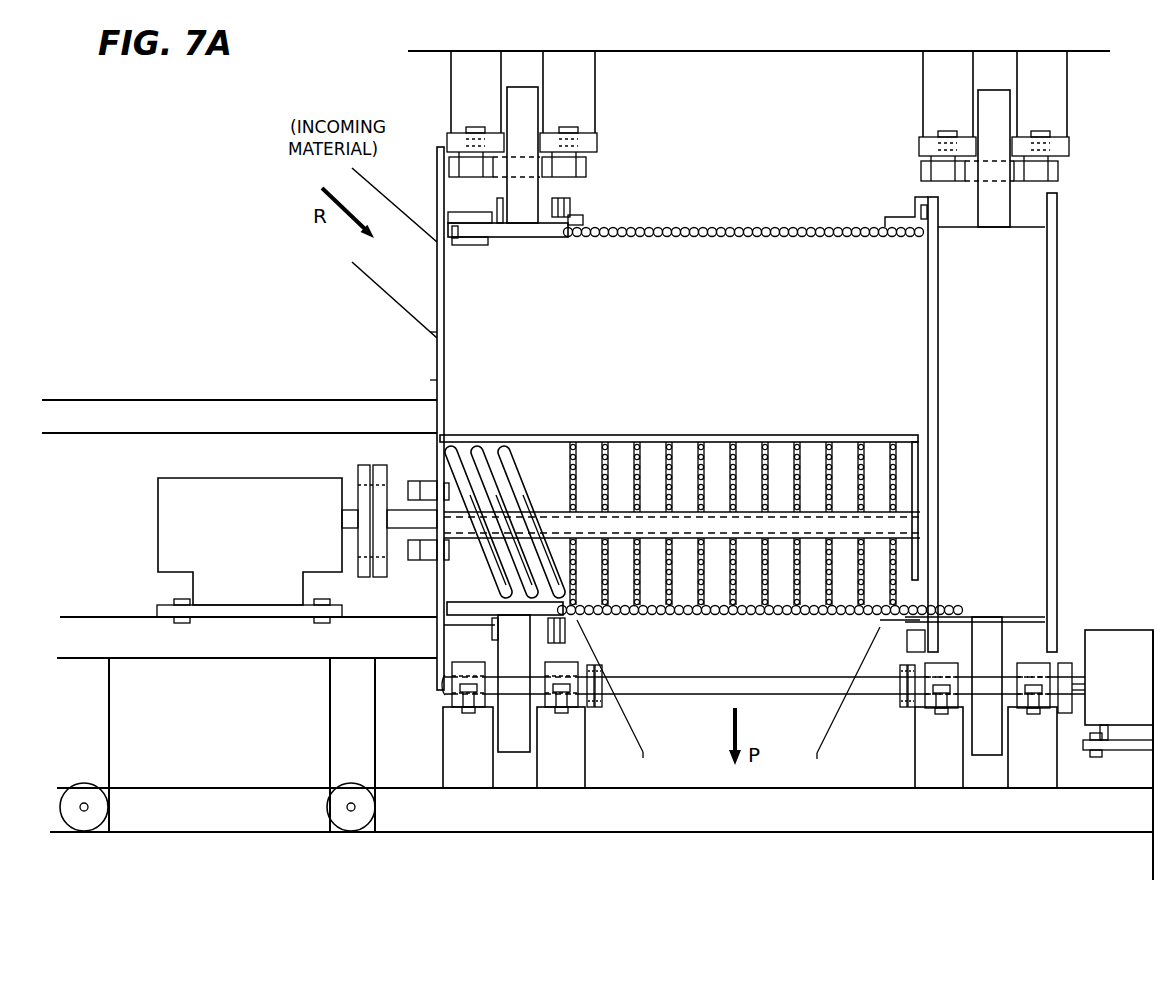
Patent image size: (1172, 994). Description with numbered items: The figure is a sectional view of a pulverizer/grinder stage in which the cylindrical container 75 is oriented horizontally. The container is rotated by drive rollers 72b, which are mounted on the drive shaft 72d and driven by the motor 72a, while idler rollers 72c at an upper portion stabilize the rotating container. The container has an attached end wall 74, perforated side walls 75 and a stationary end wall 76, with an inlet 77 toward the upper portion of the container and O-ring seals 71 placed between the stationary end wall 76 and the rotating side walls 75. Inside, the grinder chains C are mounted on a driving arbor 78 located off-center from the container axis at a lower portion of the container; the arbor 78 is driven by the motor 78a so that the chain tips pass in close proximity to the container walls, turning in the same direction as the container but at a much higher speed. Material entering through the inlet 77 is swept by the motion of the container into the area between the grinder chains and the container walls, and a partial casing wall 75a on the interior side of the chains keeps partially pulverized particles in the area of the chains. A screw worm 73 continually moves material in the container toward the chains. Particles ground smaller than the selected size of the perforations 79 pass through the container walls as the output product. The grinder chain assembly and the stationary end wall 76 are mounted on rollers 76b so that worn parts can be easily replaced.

The O-ring seals 71 is at (486, 243).
The motor 72a is at (1113, 660).
The drive rollers 72b is at (512, 745).
The idler rollers 72c is at (523, 189).
The drive shaft 72d is at (875, 690).
The screw worm 73 is at (487, 442).
The attached end wall 74 is at (928, 330).
The cylindrical container 75 is at (713, 362).
The partial casing wall 75a is at (683, 440).
The stationary end wall 76 is at (437, 376).
The rollers 76b is at (345, 810).
The inlet 77 is at (363, 273).
The driving arbor 78 is at (903, 524).
The motor 78a is at (176, 529).
The perforations 79 is at (745, 230).
The grinder chains C is at (800, 452).